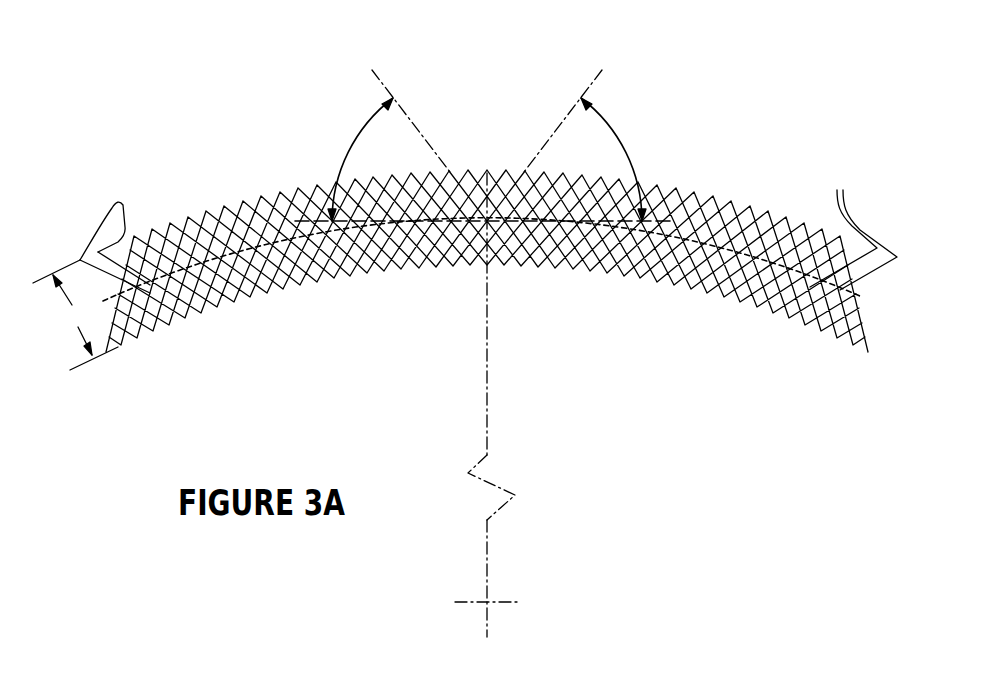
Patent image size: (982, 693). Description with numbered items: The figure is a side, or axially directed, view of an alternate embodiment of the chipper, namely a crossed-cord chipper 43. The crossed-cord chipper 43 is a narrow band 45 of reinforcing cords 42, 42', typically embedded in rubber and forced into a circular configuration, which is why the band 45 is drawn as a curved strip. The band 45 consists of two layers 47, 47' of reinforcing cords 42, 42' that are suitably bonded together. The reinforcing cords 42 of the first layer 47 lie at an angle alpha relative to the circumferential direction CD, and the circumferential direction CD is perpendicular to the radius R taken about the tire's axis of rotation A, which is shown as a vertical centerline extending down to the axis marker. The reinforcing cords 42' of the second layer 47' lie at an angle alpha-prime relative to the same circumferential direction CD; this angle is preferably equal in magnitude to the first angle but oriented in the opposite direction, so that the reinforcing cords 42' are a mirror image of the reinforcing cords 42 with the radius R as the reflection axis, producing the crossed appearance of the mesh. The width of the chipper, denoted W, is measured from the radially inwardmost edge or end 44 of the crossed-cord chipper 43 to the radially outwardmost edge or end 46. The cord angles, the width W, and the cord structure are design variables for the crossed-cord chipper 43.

The reinforcing cords 42 is at (853, 229).
The reinforcing cords 42' is at (115, 235).
The crossed-cord chipper 43 is at (210, 137).
The radially inwardmost edge 44 is at (117, 350).
The band 45 is at (357, 270).
The radially outwardmost edge 46 is at (68, 267).
The first layer 47 is at (853, 205).
The second layer 47' is at (91, 274).
The chipper width W is at (72, 315).
The radius R is at (487, 321).
The axis of rotation A is at (487, 602).
The circumferential direction CD is at (653, 237).